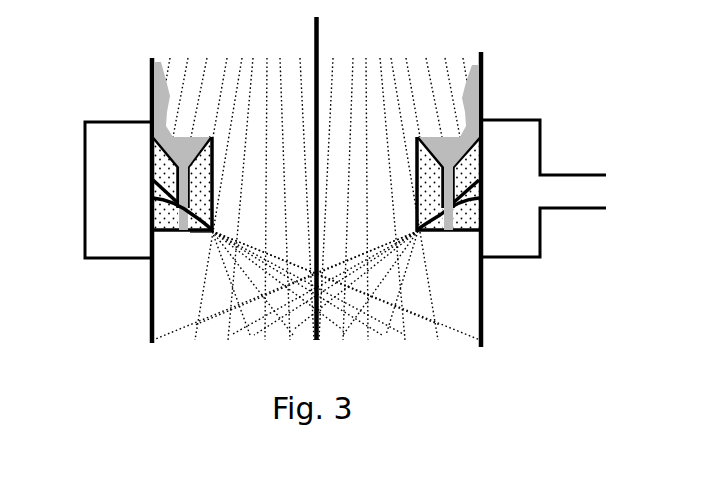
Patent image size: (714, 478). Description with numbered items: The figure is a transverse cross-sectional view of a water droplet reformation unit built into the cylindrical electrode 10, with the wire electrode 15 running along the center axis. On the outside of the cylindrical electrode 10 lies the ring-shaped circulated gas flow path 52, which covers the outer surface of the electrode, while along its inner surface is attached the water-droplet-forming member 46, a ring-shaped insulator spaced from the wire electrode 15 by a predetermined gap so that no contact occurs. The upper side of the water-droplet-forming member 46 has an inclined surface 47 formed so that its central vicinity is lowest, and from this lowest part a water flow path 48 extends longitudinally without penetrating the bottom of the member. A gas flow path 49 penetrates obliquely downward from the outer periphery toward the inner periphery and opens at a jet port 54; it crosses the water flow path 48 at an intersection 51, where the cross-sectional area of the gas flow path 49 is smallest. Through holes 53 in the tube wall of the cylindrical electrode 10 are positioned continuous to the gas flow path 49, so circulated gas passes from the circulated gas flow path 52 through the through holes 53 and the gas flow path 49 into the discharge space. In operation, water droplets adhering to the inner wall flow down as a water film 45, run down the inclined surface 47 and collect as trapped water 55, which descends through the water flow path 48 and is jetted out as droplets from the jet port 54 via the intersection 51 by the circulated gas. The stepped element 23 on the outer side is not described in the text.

The cylindrical electrode 10 is at (483, 313).
The wire electrode 15 is at (318, 34).
The lower step of holder 23 is at (580, 208).
The water film 45 is at (152, 93).
The water-droplet-forming member 46 is at (186, 244).
The inclined surface 47 is at (198, 148).
The water flow path 48 is at (183, 181).
The gas flow path 49 is at (152, 202).
The intersection 51 is at (183, 238).
The circulated gas flow path 52 is at (512, 120).
The through hole 53 is at (152, 200).
The jet port 54 is at (212, 232).
The trapped water 55 is at (442, 150).